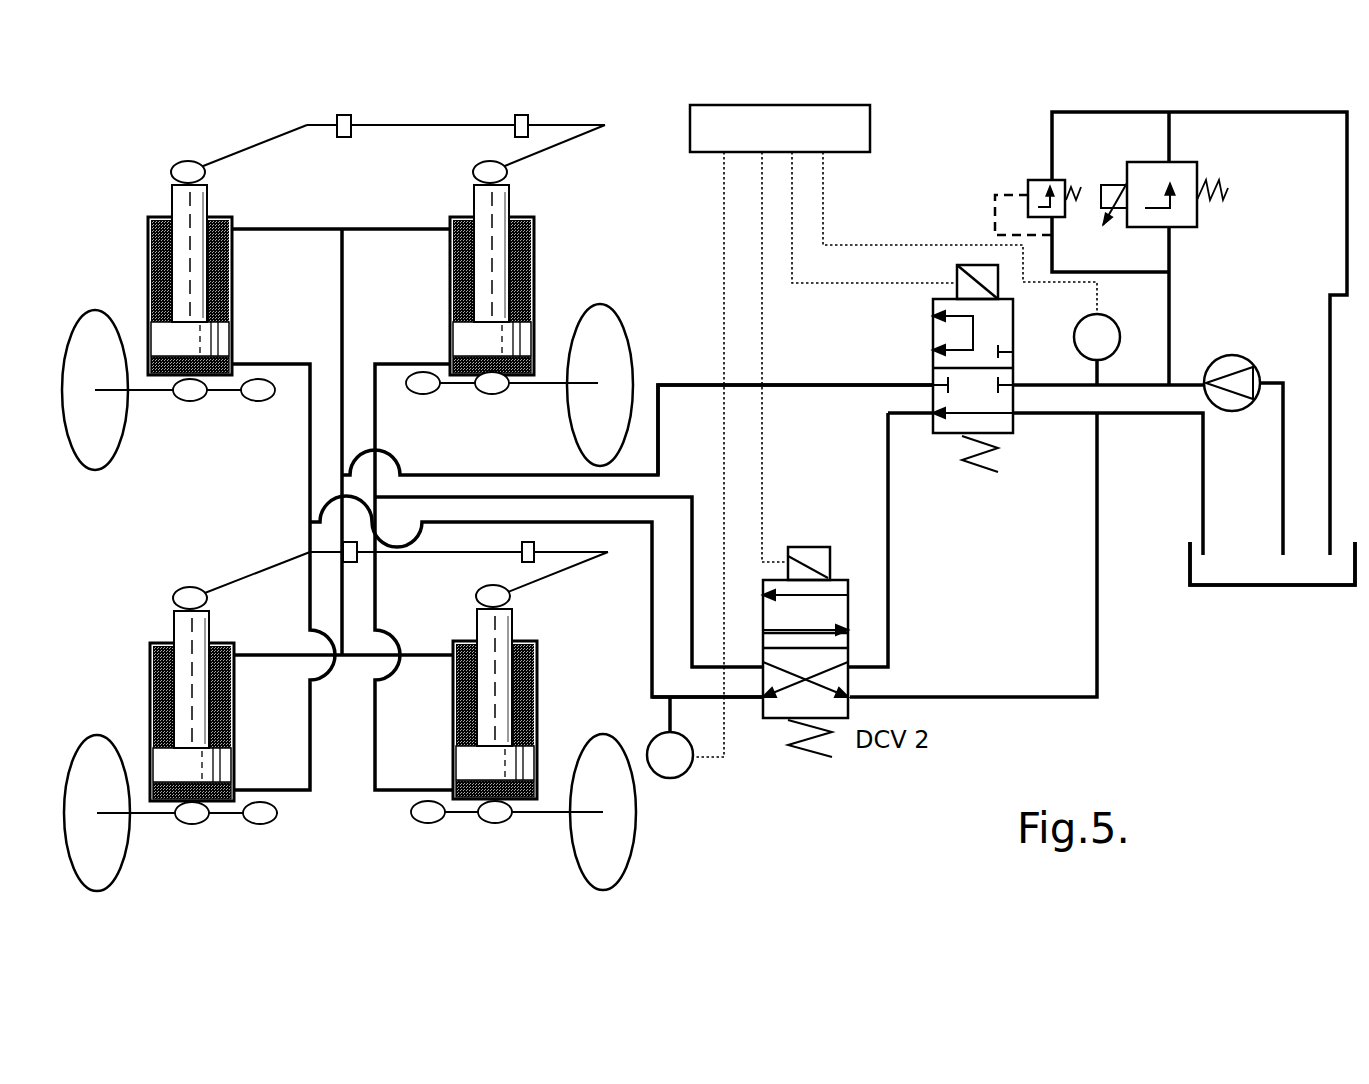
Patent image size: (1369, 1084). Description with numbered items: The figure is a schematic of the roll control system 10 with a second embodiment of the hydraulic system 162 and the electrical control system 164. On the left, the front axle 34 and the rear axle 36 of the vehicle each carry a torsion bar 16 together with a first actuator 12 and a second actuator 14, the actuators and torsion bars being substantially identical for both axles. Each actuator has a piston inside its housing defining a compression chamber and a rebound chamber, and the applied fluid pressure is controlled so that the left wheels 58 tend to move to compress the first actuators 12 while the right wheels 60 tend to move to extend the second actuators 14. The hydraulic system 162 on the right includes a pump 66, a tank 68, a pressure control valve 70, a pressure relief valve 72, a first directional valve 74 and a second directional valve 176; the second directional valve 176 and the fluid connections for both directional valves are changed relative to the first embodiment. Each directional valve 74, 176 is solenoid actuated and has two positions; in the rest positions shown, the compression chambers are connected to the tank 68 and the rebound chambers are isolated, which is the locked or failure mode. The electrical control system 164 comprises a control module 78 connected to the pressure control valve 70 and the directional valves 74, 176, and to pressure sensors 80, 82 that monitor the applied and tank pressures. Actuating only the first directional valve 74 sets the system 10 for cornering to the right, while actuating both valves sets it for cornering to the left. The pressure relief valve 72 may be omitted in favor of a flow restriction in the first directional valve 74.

The roll control system 10 is at (727, 860).
The first actuator 12 is at (140, 263).
The second actuator 14 is at (540, 276).
The torsion bar 16 is at (413, 127).
The front axle 34 is at (229, 400).
The rear axle 36 is at (234, 823).
The left wheels 58 is at (115, 440).
The right wheels 60 is at (580, 425).
The pump 66 is at (1232, 355).
The tank 68 is at (1267, 575).
The pressure control valve 70 is at (1185, 228).
The pressure relief valve 72 is at (1040, 179).
The first directional valve 74 is at (1013, 433).
The control module 78 is at (870, 125).
The pressure sensor 80 is at (1080, 322).
The pressure sensor 82 is at (688, 777).
The hydraulic system 162 is at (1110, 599).
The electrical control system 164 is at (690, 249).
The second directional valve 176 is at (838, 577).